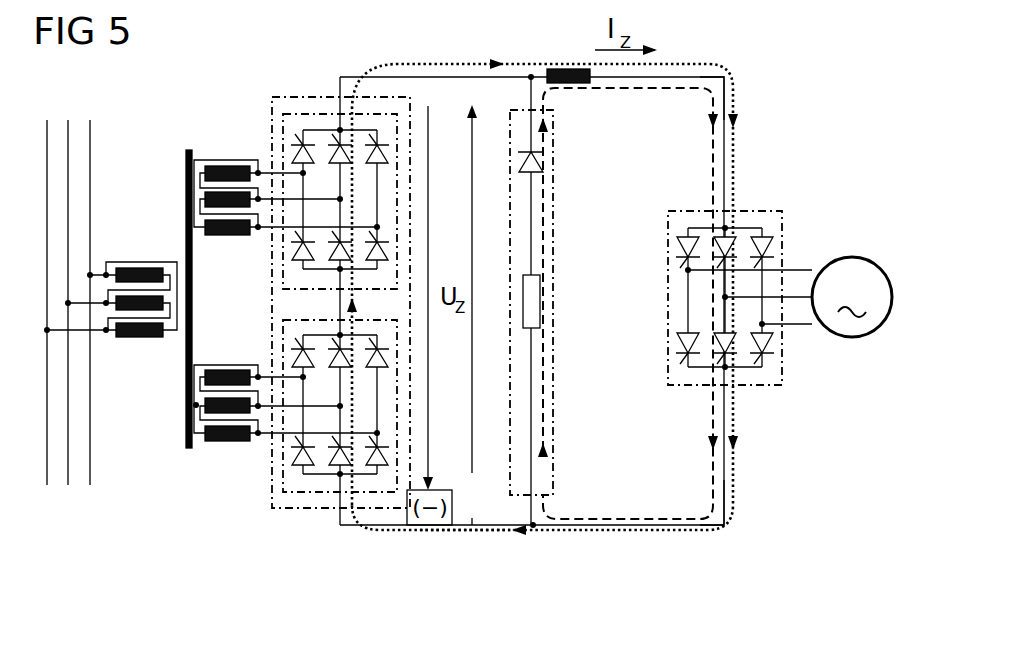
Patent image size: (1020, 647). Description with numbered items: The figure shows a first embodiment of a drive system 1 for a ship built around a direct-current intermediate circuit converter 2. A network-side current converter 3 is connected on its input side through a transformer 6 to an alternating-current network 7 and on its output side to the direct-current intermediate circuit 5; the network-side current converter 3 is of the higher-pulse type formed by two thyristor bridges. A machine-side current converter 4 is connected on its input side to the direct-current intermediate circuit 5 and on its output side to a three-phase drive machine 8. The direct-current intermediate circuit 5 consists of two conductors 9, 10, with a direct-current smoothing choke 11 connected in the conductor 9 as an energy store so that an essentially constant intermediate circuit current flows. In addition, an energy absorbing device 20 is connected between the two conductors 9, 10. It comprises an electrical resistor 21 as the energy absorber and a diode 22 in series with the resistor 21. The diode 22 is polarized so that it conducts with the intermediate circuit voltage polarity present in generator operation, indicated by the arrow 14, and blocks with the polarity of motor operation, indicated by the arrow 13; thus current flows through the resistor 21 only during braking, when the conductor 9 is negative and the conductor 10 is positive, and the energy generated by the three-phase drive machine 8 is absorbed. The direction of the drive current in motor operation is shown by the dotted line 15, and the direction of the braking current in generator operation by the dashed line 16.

The drive system 1 is at (763, 82).
The direct-current intermediate circuit converter 2 is at (754, 489).
The network-side current converter 3 is at (298, 97).
The machine-side current converter 4 is at (750, 211).
The direct-current intermediate circuit 5 is at (476, 541).
The transformer 6 is at (194, 405).
The alternating-current network 7 is at (92, 468).
The three-phase drive machine 8 is at (851, 257).
The conductor 9 is at (682, 76).
The conductor 10 is at (556, 530).
The direct-current smoothing choke 11 is at (567, 69).
The arrow 13 is at (429, 128).
The arrow 14 is at (473, 473).
The dotted line 15 is at (412, 63).
The dashed line 16 is at (635, 88).
The energy absorbing device 20 is at (556, 385).
The electrical resistor 21 is at (535, 300).
The diode 22 is at (536, 170).